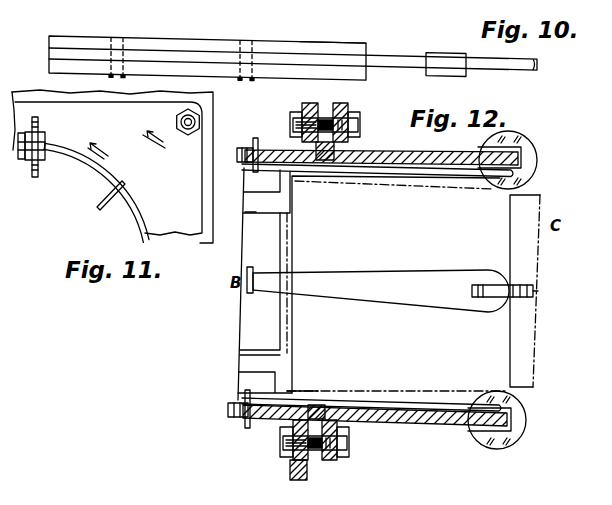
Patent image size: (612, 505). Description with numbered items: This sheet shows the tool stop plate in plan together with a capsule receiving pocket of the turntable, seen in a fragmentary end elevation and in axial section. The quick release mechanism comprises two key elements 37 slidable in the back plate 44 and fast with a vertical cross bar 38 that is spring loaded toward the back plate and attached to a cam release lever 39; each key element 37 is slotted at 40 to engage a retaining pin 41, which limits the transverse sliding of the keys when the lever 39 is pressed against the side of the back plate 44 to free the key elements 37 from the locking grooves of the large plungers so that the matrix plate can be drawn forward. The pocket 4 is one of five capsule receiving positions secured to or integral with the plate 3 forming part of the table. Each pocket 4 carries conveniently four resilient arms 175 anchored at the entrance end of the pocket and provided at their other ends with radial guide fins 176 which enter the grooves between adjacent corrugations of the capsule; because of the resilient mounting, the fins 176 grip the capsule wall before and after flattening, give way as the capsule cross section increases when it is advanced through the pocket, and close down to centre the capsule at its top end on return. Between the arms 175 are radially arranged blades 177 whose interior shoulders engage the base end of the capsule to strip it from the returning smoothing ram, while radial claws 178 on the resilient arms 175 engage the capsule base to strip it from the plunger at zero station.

In FIG. 11, the plate 3 is at (208, 103).
In FIG. 12, the plate 3 is at (311, 113).
In FIG. 11, the pocket 4 is at (122, 185).
In FIG. 12, the pocket 4 is at (388, 153).
In FIG. 10, the key element 37 is at (283, 58).
In FIG. 10, the vertical cross bar 38 is at (468, 53).
In FIG. 10, the cam release lever 39 is at (414, 60).
In FIG. 10, the slot 40 is at (174, 57).
In FIG. 10, the retaining pin 41 is at (145, 32).
In FIG. 10, the back plate 44 is at (316, 43).
In FIG. 11, the resilient arm 175 is at (42, 162).
In FIG. 12, the resilient arm 175 is at (390, 176).
In FIG. 11, the radial guide fin 176 is at (40, 119).
In FIG. 12, the radial guide fin 176 is at (536, 157).
In FIG. 11, the radial blade 177 is at (118, 200).
In FIG. 12, the radial blade 177 is at (248, 213).
In FIG. 12, the radial claw 178 is at (238, 156).